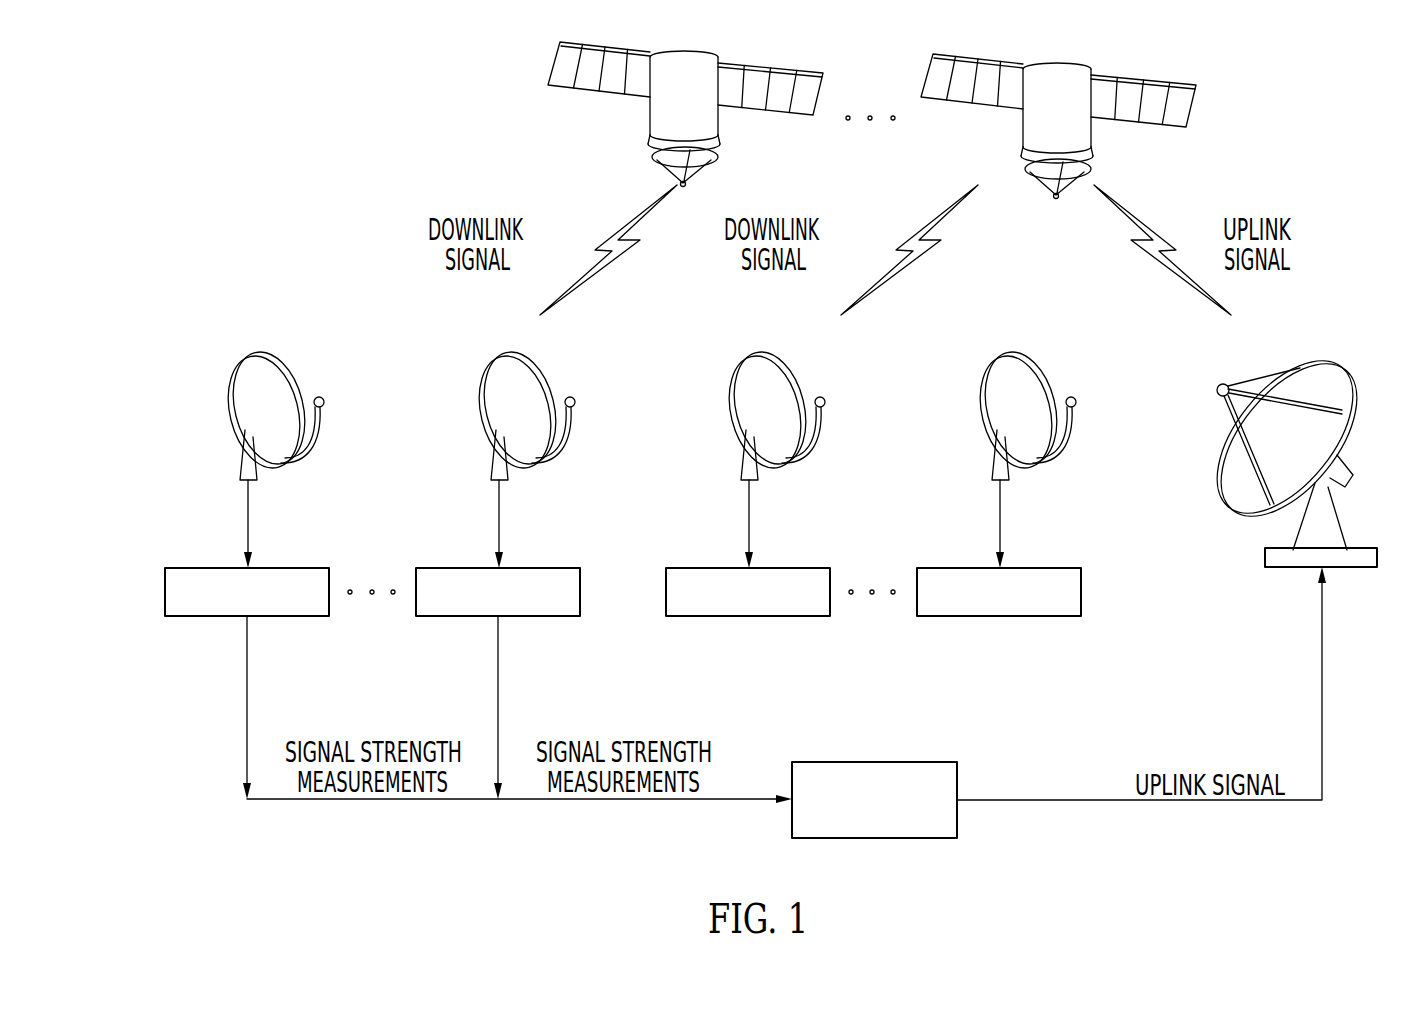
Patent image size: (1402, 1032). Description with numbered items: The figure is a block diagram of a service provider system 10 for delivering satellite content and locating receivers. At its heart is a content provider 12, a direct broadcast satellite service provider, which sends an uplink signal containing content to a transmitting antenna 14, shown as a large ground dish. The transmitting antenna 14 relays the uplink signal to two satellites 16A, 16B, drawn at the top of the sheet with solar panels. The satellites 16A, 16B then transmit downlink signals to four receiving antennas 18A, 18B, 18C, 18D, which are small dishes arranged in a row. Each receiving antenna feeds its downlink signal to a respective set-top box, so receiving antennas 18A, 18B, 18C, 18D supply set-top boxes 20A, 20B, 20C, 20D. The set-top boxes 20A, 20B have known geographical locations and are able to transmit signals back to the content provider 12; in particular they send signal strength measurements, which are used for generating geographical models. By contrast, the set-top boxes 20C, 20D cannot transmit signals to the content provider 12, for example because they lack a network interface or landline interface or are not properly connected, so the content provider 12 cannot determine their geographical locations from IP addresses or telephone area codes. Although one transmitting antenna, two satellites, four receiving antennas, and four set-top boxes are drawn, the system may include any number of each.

The service provider system 10 is at (262, 132).
The content provider 12 is at (876, 762).
The transmitting antenna 14 is at (1337, 516).
The satellite 16A is at (692, 50).
The satellite 16B is at (1058, 112).
The receiving antenna 18A is at (283, 363).
The receiving antenna 18B is at (543, 409).
The receiving antenna 18C is at (793, 409).
The receiving antenna 18D is at (1045, 409).
The set-top box 20A is at (210, 568).
The set-top box 20B is at (486, 548).
The set-top box 20C is at (736, 548).
The set-top box 20D is at (987, 548).